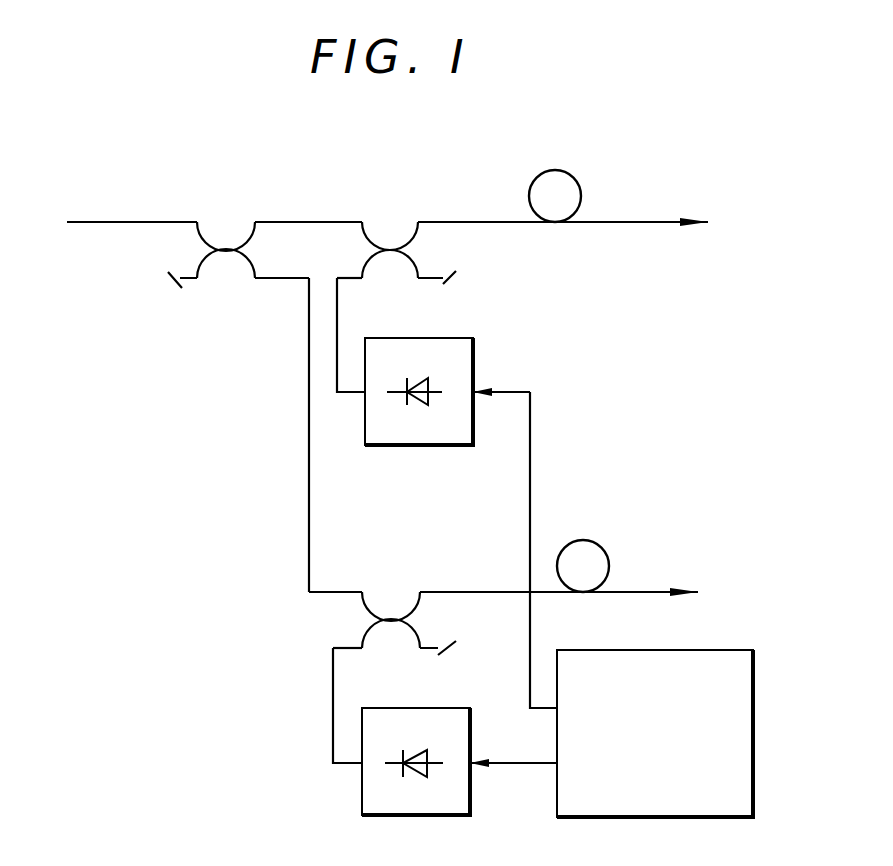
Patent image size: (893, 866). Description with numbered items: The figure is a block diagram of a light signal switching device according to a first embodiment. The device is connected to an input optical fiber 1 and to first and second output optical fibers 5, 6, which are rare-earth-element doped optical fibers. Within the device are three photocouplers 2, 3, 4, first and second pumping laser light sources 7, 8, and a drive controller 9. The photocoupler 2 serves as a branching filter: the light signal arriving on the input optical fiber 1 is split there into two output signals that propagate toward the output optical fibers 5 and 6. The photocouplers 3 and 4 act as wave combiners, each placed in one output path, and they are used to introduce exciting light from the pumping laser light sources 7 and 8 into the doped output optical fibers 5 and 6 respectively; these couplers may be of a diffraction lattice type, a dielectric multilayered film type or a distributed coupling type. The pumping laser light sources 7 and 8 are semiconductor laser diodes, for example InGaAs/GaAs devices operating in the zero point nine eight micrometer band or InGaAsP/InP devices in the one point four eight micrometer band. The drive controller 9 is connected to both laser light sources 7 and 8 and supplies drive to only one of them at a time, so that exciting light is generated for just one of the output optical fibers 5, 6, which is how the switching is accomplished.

The input optical fiber 1 is at (132, 202).
The photocoupler 2 is at (238, 235).
The photocoupler 3 is at (396, 233).
The photocoupler 4 is at (394, 604).
The first output optical fiber 5 is at (555, 217).
The second output optical fiber 6 is at (583, 546).
The first pumping laser light source 7 is at (419, 374).
The second pumping laser light source 8 is at (416, 785).
The drive controller 9 is at (655, 756).